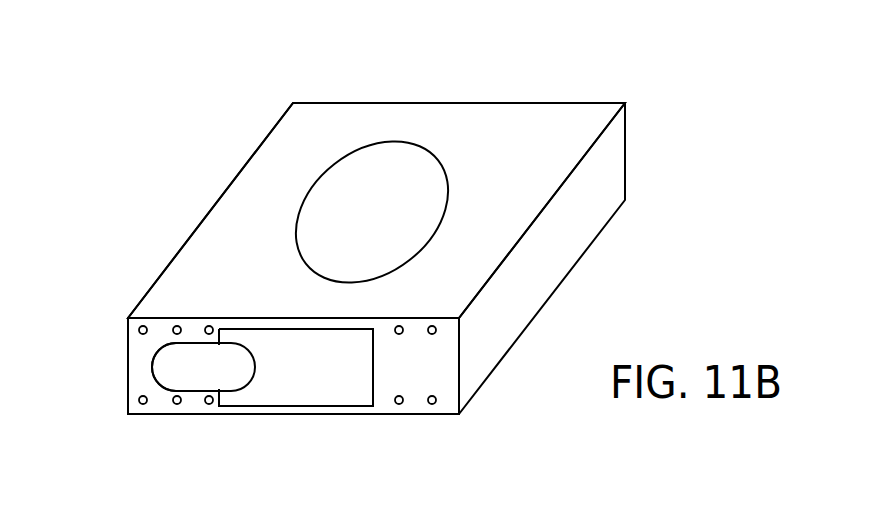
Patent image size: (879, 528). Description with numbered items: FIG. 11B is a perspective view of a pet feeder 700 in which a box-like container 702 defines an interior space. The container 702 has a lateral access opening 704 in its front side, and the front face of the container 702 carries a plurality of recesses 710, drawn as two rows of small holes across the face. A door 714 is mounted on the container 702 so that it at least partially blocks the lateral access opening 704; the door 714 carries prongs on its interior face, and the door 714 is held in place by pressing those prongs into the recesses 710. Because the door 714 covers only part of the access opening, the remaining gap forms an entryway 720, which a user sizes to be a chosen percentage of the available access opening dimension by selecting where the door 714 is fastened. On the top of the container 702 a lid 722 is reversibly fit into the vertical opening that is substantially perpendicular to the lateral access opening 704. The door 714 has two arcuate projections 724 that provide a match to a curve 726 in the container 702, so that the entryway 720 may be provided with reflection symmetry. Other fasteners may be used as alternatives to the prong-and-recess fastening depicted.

The feeder 700 is at (668, 158).
The container 702 is at (498, 132).
The lateral access opening 704 is at (156, 375).
The recesses 710 is at (399, 403).
The door 714 is at (340, 377).
The entryway 720 is at (195, 353).
The lid 722 is at (398, 210).
The arcuate projections 724 is at (231, 397).
The curve 726 is at (172, 381).